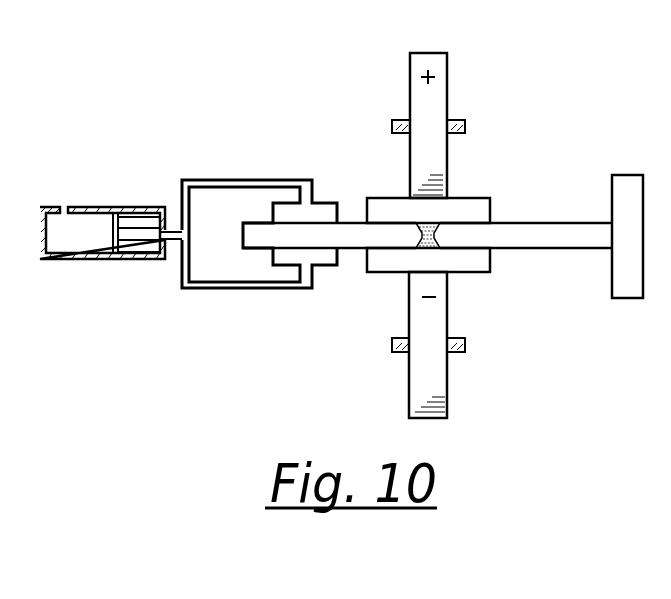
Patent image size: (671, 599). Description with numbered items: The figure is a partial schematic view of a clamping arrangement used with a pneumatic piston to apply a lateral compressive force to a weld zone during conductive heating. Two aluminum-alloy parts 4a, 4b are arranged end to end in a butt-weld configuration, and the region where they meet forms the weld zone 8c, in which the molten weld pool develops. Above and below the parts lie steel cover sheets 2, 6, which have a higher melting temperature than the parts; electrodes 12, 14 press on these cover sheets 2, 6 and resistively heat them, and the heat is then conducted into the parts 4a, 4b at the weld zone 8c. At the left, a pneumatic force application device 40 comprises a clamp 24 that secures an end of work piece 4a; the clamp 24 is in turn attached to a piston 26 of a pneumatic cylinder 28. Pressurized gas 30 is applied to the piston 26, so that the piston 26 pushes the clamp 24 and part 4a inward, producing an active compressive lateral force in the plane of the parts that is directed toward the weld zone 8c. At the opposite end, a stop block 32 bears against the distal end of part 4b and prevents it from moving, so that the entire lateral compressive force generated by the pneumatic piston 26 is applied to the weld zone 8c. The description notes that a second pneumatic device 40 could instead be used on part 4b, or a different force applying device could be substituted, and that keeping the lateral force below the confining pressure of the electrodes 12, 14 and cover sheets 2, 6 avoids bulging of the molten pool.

The cover sheet 2 is at (481, 207).
The part 4a is at (245, 235).
The part 4b is at (558, 235).
The cover sheet 6 is at (477, 268).
The weld zone 8c is at (414, 237).
The electrode 12 is at (440, 108).
The electrode 14 is at (435, 376).
The clamp 24 is at (288, 182).
The piston 26 is at (118, 210).
The pneumatic cylinder 28 is at (103, 234).
The pressurized gas 30 is at (102, 238).
The stop block 32 is at (622, 270).
The force application device 40 is at (185, 160).